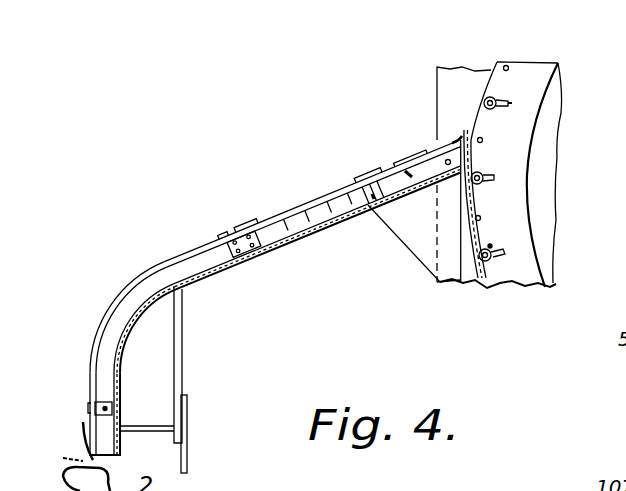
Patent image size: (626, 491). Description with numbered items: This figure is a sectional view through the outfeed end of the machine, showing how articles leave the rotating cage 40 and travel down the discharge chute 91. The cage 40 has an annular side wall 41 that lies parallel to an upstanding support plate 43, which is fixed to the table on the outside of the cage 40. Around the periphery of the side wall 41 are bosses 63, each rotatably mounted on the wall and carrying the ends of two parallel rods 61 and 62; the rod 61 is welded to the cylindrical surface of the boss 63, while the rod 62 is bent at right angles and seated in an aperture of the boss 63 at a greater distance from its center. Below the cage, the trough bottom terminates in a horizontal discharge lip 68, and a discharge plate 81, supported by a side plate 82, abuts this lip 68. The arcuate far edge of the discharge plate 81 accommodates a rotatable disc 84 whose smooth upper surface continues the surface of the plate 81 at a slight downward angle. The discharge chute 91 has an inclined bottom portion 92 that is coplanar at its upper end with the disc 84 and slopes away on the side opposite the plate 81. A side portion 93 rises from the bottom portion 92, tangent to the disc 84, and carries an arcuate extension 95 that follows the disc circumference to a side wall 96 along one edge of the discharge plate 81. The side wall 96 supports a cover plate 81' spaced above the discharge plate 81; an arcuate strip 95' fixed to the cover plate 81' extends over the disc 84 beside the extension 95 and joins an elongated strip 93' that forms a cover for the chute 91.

The cylindrical cage 40 is at (538, 290).
The annular side wall 41 is at (564, 24).
The support plate 43 is at (448, 68).
The rod 61 is at (505, 100).
The rod 62 is at (510, 106).
The boss 63 is at (500, 122).
The discharge lip 68 is at (486, 163).
The discharge plate 81 is at (379, 144).
The cover plate 81' is at (408, 133).
The side plate 82 is at (420, 254).
The rotatable disc 84 is at (303, 238).
The discharge chute 91 is at (96, 262).
The inclined bottom portion 92 is at (198, 268).
The side portion 93 is at (87, 372).
The elongated strip 93' is at (76, 386).
The arcuate extension 95 is at (299, 194).
The arcuate strip 95' is at (272, 175).
The side wall 96 is at (391, 180).